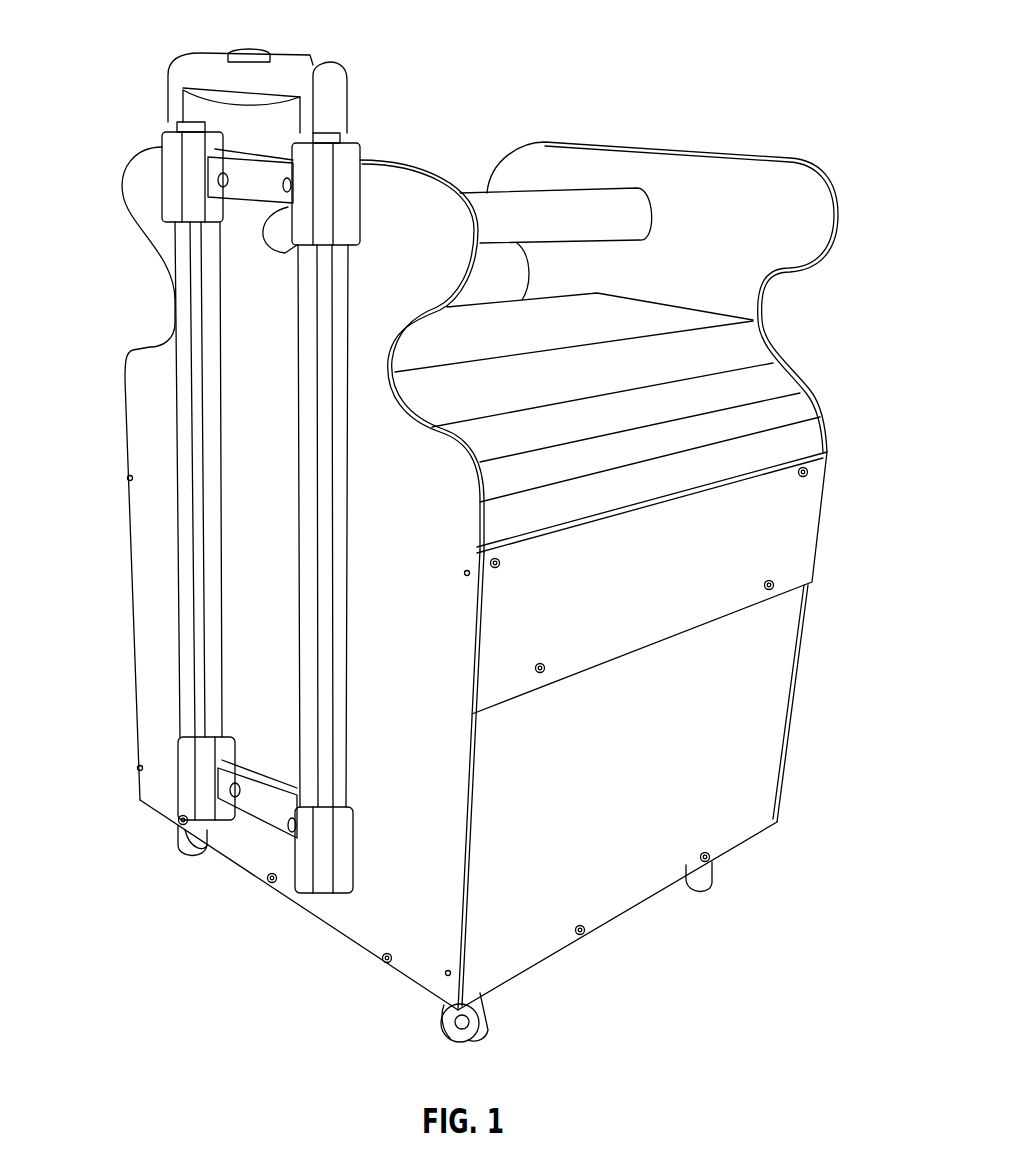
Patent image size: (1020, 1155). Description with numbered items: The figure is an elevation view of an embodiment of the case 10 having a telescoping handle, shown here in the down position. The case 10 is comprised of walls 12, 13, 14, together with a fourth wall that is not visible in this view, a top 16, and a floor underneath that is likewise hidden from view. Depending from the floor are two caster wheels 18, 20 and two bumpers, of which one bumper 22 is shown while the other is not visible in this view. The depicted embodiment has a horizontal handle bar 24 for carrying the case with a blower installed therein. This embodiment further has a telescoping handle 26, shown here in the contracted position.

The case 10 is at (113, 167).
The wall 12 is at (392, 882).
The wall 13 is at (832, 200).
The wall 14 is at (690, 710).
The top 16 is at (587, 315).
The caster wheel 18 is at (490, 1030).
The caster wheel 20 is at (187, 845).
The bumper 22 is at (712, 882).
The horizontal handle bar 24 is at (468, 193).
The telescoping handle 26 is at (332, 62).